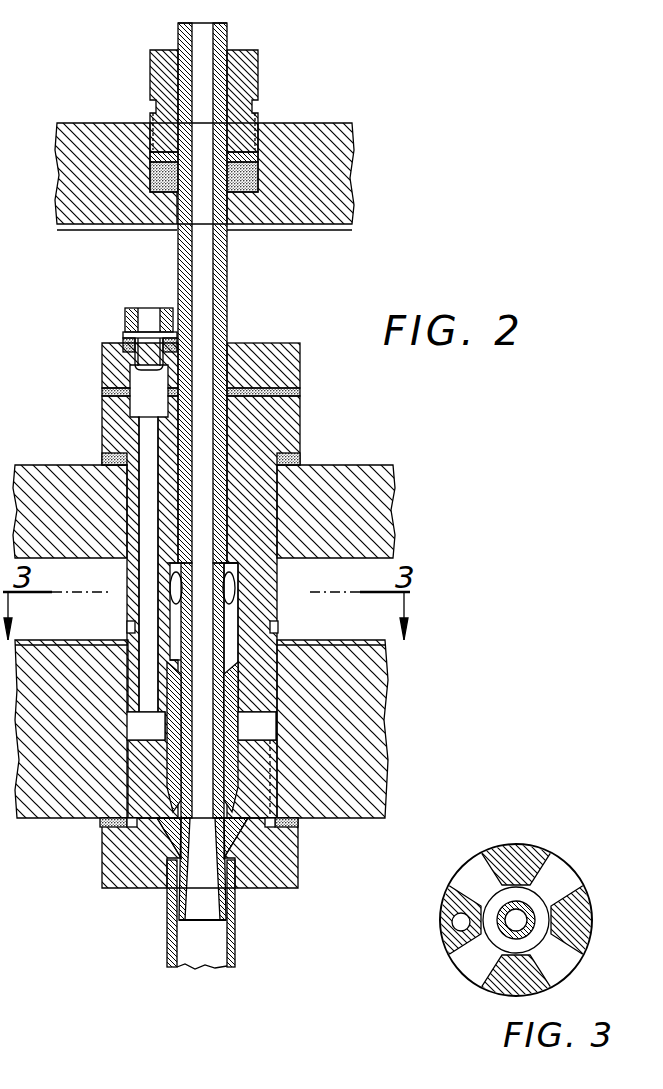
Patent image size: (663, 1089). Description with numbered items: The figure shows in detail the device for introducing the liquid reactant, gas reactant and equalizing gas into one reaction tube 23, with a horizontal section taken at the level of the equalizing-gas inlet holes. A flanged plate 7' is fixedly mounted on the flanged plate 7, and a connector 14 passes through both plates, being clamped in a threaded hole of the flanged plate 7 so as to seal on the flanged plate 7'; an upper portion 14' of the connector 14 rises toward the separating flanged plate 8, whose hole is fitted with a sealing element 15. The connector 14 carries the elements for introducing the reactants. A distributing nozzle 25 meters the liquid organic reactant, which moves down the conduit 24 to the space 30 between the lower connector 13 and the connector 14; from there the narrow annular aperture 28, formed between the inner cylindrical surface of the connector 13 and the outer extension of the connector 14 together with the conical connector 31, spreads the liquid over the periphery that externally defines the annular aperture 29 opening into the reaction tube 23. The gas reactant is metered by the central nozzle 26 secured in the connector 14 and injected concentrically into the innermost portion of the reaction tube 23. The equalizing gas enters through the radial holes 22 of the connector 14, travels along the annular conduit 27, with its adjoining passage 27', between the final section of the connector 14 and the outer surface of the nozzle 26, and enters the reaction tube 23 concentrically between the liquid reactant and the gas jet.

In FIG. 2, the flanged plate 7 is at (218, 729).
In FIG. 2, the flanged plate 7' is at (204, 489).
In FIG. 2, the separating flanged plate 8 is at (322, 127).
In FIG. 2, the connector 13 is at (292, 868).
In FIG. 2, the connector 14 is at (227, 603).
In FIG. 3, the connector 14 is at (516, 937).
In FIG. 2, the body cap 14' is at (230, 349).
In FIG. 2, the sealing element 15 is at (151, 78).
In FIG. 2, the radial holes 22 is at (228, 592).
In FIG. 3, the radial holes 22 is at (558, 887).
In FIG. 2, the reaction tube 23 is at (233, 933).
In FIG. 2, the conduit 24 is at (148, 563).
In FIG. 3, the conduit 24 is at (456, 924).
In FIG. 2, the distributing nozzle 25 is at (147, 312).
In FIG. 2, the distributing nozzle 26 is at (226, 37).
In FIG. 3, the distributing nozzle 26 is at (530, 925).
In FIG. 2, the annular conduit 27 is at (284, 719).
In FIG. 2, the channel 27' is at (261, 637).
In FIG. 2, the annular aperture 28 is at (238, 788).
In FIG. 2, the annular aperture 29 is at (180, 897).
In FIG. 2, the space 30 is at (143, 728).
In FIG. 2, the conical connector 31 is at (176, 820).